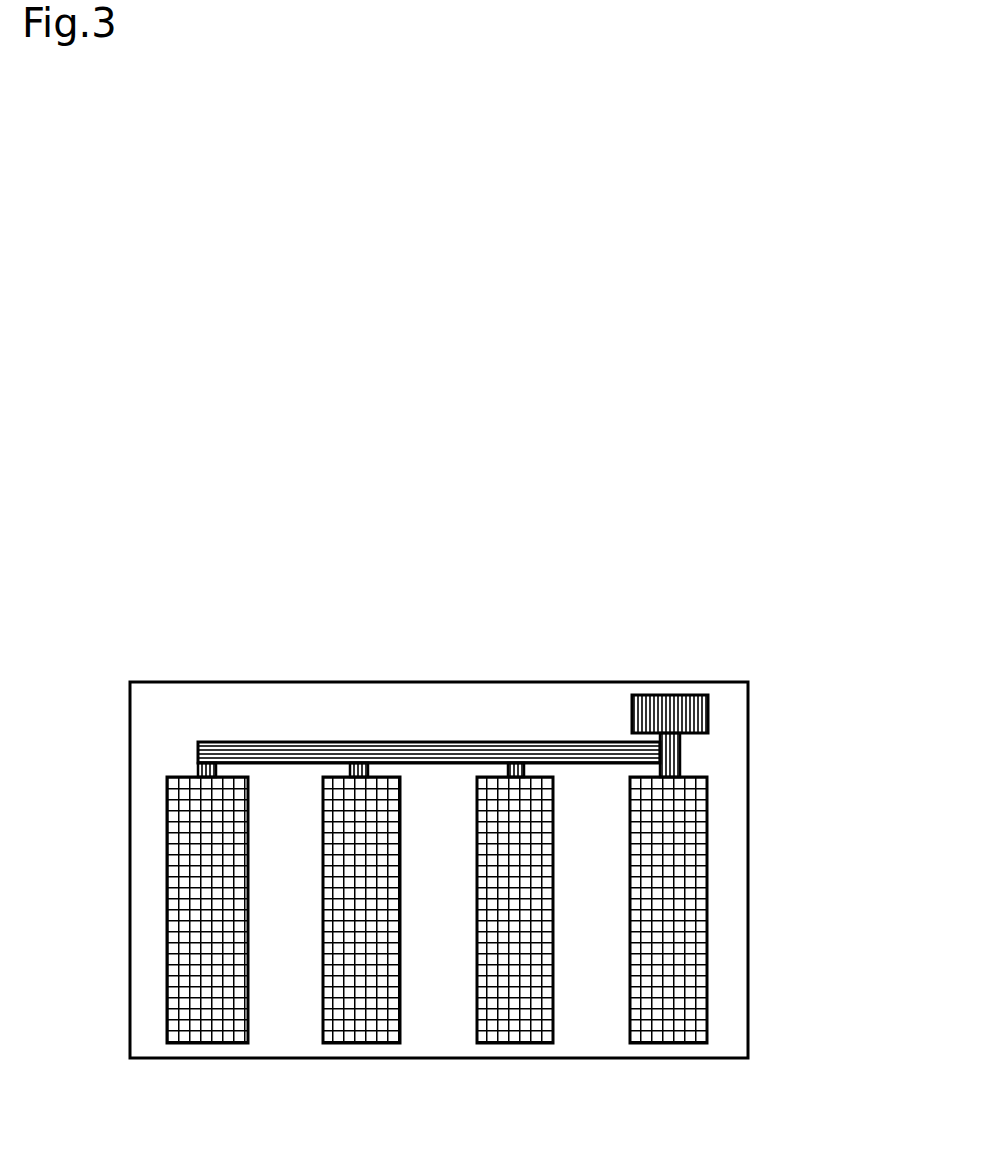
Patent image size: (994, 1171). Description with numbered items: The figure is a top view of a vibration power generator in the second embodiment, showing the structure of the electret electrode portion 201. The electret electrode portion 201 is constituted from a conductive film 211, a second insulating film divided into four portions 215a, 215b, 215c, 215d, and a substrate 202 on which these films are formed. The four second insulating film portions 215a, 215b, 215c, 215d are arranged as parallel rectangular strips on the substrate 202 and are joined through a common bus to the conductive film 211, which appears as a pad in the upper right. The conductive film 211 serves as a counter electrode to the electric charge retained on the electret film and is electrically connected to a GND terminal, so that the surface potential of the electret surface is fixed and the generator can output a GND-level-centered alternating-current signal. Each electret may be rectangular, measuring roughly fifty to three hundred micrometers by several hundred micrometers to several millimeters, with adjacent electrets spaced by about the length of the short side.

The electret electrode portion 201 is at (723, 512).
The substrate 202 is at (738, 1008).
The conductive film 211 is at (663, 695).
The second insulating film 215a is at (205, 1003).
The second insulating film 215b is at (358, 985).
The second insulating film 215c is at (503, 1000).
The second insulating film 215d is at (660, 985).